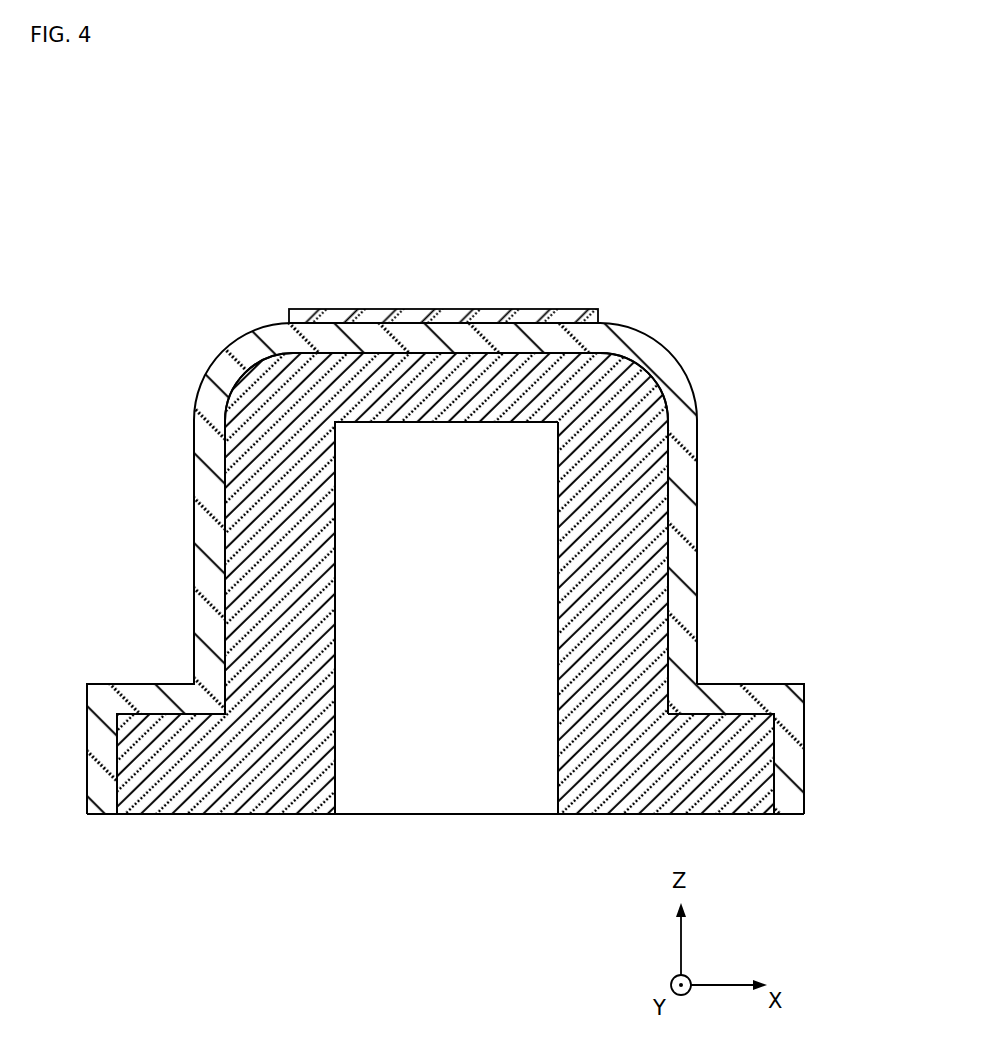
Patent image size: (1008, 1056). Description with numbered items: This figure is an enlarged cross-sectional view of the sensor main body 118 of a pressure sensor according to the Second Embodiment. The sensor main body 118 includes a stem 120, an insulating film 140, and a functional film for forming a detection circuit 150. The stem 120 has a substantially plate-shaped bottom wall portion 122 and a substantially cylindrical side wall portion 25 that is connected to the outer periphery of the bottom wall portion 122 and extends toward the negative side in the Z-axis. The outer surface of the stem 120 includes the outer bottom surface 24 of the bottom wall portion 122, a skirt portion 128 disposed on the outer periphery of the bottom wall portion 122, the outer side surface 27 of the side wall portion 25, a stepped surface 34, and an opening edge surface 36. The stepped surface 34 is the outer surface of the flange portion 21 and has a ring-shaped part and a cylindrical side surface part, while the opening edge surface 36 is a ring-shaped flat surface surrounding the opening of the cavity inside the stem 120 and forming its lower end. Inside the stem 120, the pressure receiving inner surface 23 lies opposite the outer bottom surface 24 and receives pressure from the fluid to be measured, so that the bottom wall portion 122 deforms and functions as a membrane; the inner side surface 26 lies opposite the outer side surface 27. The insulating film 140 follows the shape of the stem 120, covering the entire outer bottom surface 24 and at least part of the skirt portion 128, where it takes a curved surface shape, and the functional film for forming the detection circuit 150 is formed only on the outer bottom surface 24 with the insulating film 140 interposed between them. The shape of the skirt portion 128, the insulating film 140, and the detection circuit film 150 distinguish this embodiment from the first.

The sensor main body 118 is at (480, 540).
The stem 120 is at (480, 555).
The bottom wall portion 122 is at (527, 387).
The skirt portion 128 is at (248, 368).
The insulating film 140 is at (323, 318).
The functional film for forming a detection circuit 150 is at (418, 317).
The outer bottom surface 24 is at (462, 352).
The side wall portion 25 is at (257, 520).
The outer side surface 27 is at (667, 492).
The pressure receiving inner surface 23 is at (428, 422).
The inner side surface 26 is at (558, 675).
The flange portion 21 is at (727, 747).
The stepped surface 34 is at (717, 713).
The opening edge surface 36 is at (665, 785).